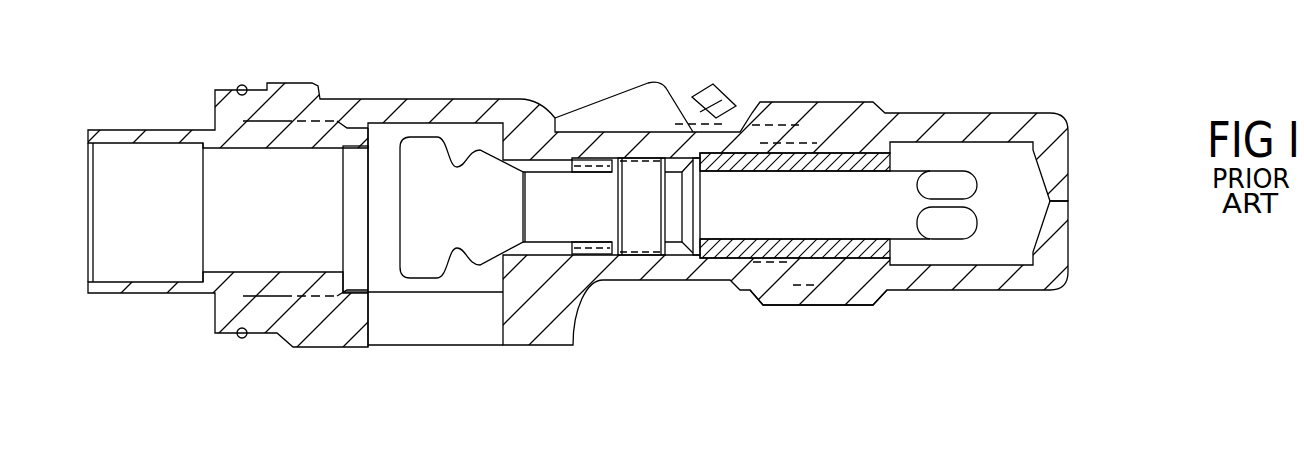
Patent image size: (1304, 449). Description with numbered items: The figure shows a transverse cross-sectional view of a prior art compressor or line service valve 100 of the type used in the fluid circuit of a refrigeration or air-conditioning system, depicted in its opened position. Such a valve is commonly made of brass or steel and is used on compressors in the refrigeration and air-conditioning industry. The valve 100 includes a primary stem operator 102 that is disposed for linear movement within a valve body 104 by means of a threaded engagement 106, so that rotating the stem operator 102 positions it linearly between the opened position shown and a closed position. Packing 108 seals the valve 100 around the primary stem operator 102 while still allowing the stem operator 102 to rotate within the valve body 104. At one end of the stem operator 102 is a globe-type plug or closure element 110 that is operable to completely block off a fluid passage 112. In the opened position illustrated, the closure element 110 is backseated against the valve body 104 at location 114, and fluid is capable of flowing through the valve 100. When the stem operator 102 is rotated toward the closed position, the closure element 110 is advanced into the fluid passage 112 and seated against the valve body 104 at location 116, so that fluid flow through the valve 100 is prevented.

The valve 100 is at (1068, 109).
The primary stem operator 102 is at (896, 178).
The valve body 104 is at (583, 293).
The threaded engagement 106 is at (657, 257).
The packing 108 is at (768, 291).
The closure element 110 is at (420, 267).
The fluid passage 112 is at (290, 244).
The backseat location 114 is at (500, 266).
The seat location 116 is at (375, 138).